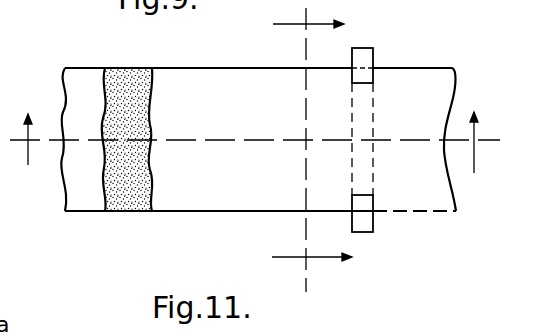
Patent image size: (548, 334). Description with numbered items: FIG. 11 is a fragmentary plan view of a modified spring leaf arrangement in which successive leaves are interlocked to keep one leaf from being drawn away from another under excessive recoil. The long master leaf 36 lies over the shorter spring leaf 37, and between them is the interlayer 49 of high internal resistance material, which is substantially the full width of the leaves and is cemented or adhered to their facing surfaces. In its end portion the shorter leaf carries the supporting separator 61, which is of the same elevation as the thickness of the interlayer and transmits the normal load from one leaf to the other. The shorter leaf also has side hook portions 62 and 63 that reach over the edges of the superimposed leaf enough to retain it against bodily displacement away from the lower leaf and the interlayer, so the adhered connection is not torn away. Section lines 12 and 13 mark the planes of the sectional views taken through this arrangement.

The section line 12- 12 is at (312, 147).
The section line 13- 13 is at (258, 143).
The master leaf 36 is at (260, 139).
The spring leaf 37 is at (75, 88).
The interlayer 49 is at (130, 92).
The supporting separator 61 is at (373, 105).
The side hook portion 62 is at (362, 60).
The side hook portion 63 is at (362, 205).